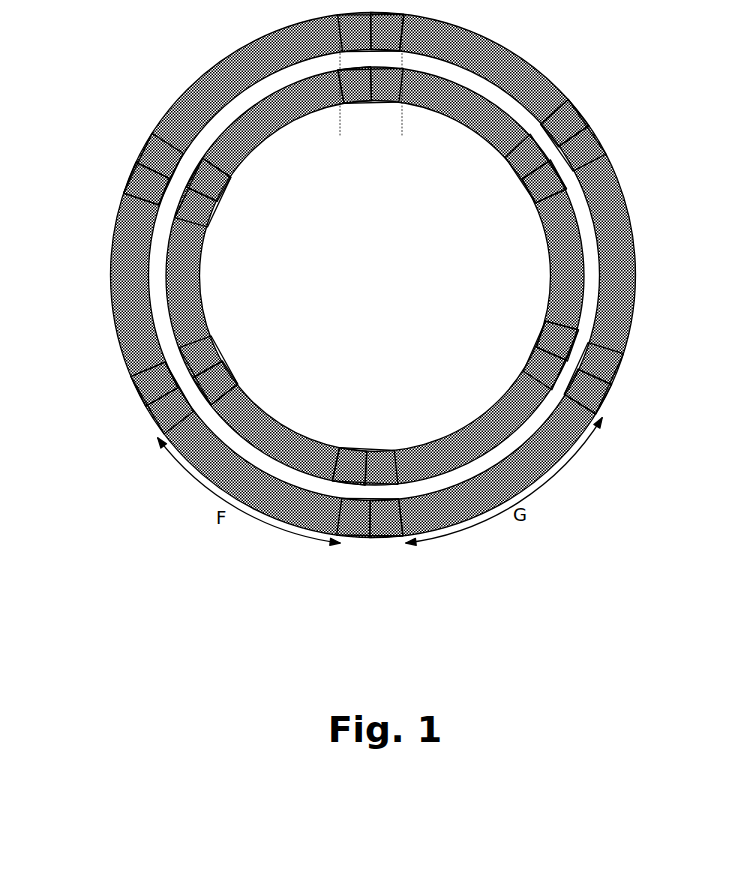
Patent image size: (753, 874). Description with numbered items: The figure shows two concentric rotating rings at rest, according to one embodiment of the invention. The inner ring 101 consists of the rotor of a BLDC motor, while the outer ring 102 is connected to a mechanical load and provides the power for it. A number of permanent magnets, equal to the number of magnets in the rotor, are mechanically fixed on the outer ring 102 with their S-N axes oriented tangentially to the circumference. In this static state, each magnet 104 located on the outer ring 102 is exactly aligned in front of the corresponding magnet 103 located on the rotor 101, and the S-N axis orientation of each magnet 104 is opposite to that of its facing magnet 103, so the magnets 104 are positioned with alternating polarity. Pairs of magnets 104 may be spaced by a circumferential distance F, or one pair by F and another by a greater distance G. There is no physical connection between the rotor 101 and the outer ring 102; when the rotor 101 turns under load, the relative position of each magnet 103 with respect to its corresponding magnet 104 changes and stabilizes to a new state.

The inner ring 101 is at (377, 276).
The outer ring 102 is at (385, 266).
The magnet 103 is at (239, 207).
The magnet 104 is at (346, 275).